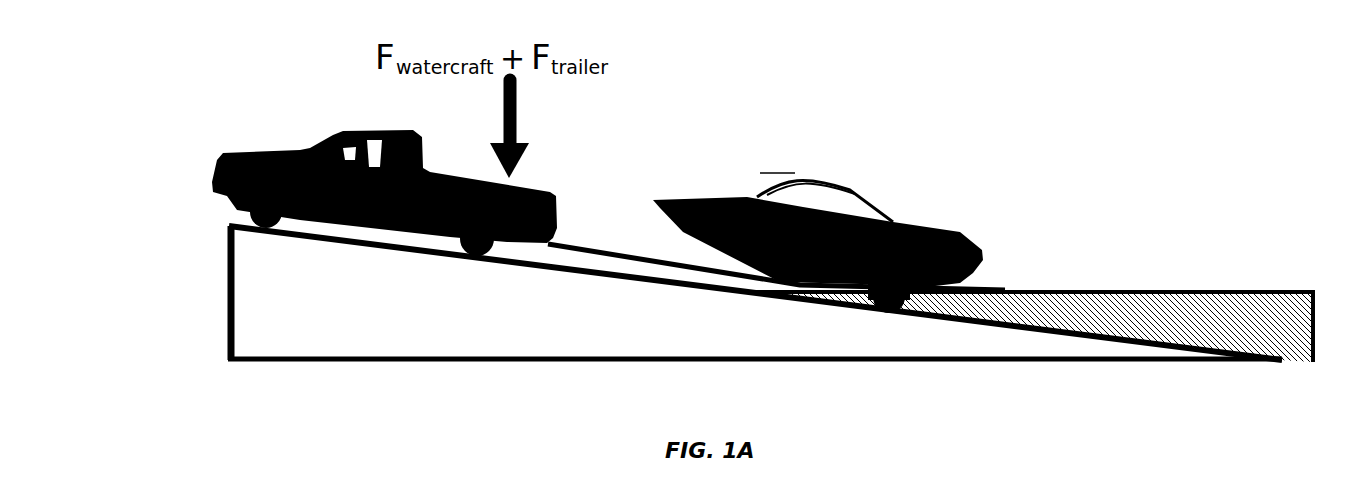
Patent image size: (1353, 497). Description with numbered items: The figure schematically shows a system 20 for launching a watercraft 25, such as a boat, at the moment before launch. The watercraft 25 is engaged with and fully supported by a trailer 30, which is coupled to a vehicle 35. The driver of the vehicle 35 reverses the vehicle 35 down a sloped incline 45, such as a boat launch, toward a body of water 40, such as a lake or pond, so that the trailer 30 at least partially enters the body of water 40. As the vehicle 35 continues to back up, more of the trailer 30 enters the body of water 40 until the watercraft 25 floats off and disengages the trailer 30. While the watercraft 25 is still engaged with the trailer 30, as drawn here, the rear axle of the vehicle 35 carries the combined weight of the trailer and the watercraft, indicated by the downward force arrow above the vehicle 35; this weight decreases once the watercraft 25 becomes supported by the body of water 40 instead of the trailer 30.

The system 20 is at (158, 146).
The watercraft 25 is at (933, 222).
The trailer 30 is at (602, 248).
The vehicle 35 is at (213, 188).
The body of water 40 is at (1168, 277).
The sloped incline 45 is at (266, 338).